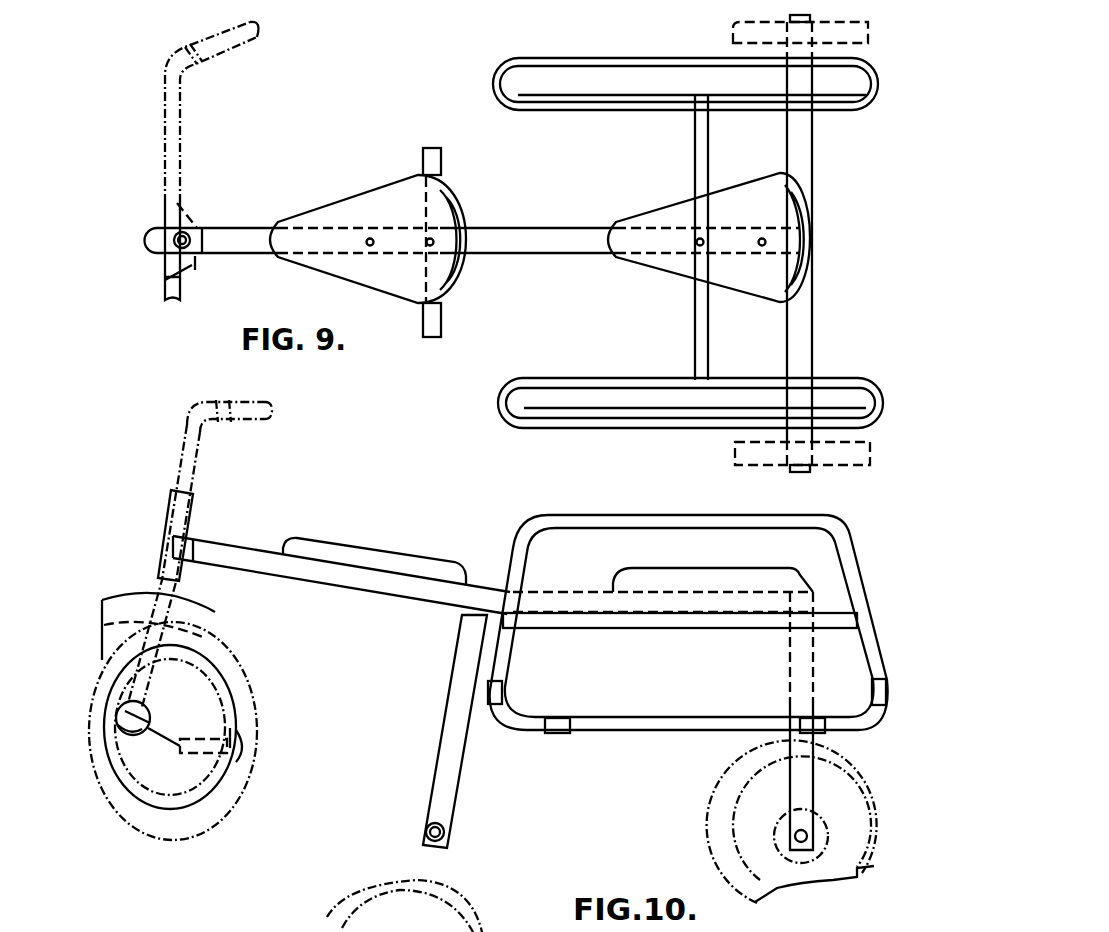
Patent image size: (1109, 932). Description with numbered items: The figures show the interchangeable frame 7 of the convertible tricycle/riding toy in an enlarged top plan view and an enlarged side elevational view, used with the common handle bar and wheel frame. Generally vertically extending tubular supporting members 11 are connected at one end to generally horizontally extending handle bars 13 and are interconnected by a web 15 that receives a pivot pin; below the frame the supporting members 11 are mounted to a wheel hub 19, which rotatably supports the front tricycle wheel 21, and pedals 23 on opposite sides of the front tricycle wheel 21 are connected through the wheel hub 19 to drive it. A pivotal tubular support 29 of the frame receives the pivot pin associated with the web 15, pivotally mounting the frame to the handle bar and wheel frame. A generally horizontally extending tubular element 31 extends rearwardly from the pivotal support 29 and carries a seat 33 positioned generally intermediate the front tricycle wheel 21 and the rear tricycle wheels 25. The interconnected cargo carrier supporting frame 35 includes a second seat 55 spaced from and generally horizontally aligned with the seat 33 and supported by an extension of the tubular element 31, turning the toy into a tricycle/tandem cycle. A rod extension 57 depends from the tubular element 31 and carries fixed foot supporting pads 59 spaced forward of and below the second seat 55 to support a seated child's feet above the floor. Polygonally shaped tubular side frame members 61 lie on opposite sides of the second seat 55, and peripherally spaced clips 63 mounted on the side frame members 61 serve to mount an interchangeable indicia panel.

In FIG. 9, the interchangeable frame 7 is at (920, 80).
In FIG. 10, the interchangeable frame 7 is at (872, 565).
In FIG. 10, the vertically extending tubular supporting member 11 is at (165, 597).
In FIG. 9, the handle bar 13 is at (240, 50).
In FIG. 10, the handle bar 13 is at (262, 425).
In FIG. 9, the web 15 is at (172, 213).
In FIG. 10, the wheel hub 19 is at (147, 702).
In FIG. 10, the front tricycle wheel 21 is at (234, 740).
In FIG. 10, the pedal 23 is at (233, 756).
In FIG. 9, the rear tricycle wheel 25 is at (868, 40).
In FIG. 10, the rear tricycle wheel 25 is at (876, 868).
In FIG. 9, the pivotal tubular support 29 is at (162, 232).
In FIG. 10, the pivotal tubular support 29 is at (170, 517).
In FIG. 9, the horizontally extending tubular element 31 is at (219, 246).
In FIG. 10, the horizontally extending tubular element 31 is at (419, 586).
In FIG. 9, the seat 33 is at (362, 214).
In FIG. 10, the seat 33 is at (373, 548).
In FIG. 9, the cargo carrier supporting frame 35 is at (826, 249).
In FIG. 10, the cargo carrier supporting frame 35 is at (543, 542).
In FIG. 9, the second seat 55 is at (742, 193).
In FIG. 10, the second seat 55 is at (733, 567).
In FIG. 10, the rod extension 57 is at (452, 752).
In FIG. 9, the foot supporting pad 59 is at (436, 163).
In FIG. 10, the foot supporting pad 59 is at (446, 832).
In FIG. 9, the tubular side frame member 61 is at (607, 66).
In FIG. 10, the tubular side frame member 61 is at (864, 588).
In FIG. 10, the clip 63 is at (888, 702).